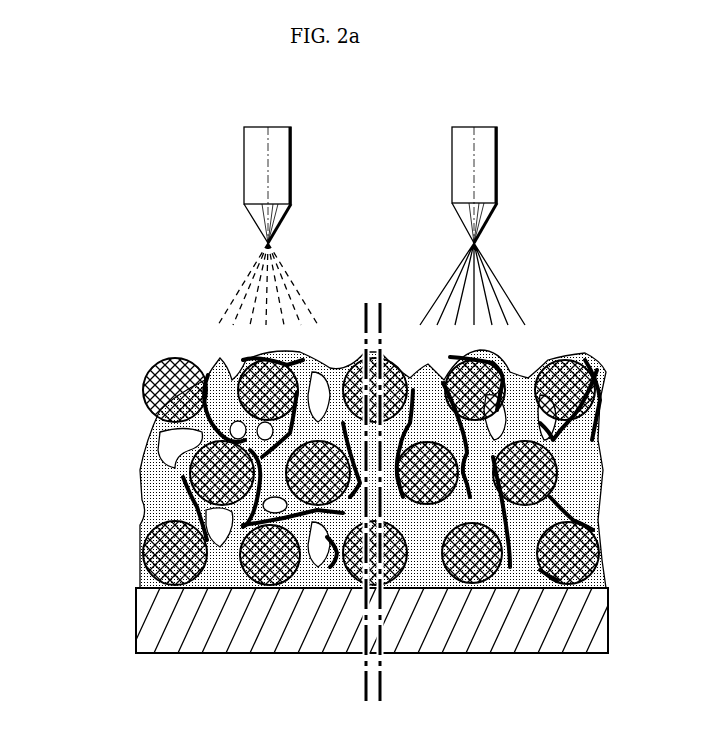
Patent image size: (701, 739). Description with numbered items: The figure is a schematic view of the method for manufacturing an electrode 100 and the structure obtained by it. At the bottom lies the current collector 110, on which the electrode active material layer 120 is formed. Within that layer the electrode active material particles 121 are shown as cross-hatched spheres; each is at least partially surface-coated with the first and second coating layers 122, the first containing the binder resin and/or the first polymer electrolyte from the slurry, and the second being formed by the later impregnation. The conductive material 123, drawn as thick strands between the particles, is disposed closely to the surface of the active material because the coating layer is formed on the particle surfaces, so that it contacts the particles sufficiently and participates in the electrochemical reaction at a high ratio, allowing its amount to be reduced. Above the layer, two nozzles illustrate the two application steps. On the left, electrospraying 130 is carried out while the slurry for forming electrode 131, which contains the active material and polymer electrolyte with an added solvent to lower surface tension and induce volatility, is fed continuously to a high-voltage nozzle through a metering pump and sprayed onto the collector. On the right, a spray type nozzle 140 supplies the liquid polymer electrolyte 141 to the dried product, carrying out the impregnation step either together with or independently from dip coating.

The electrode 100 is at (134, 266).
The current collector 110 is at (145, 617).
The electrode active material layer 120 is at (96, 487).
The electrode active material particles 121 is at (146, 393).
The first and second coating layers 122 is at (149, 445).
The conductive material 123 is at (143, 517).
The electrospraying 130 is at (279, 127).
The slurry for forming electrode 131 is at (287, 274).
The spray type nozzle 140 is at (485, 127).
The liquid polymer electrolyte 141 is at (492, 272).